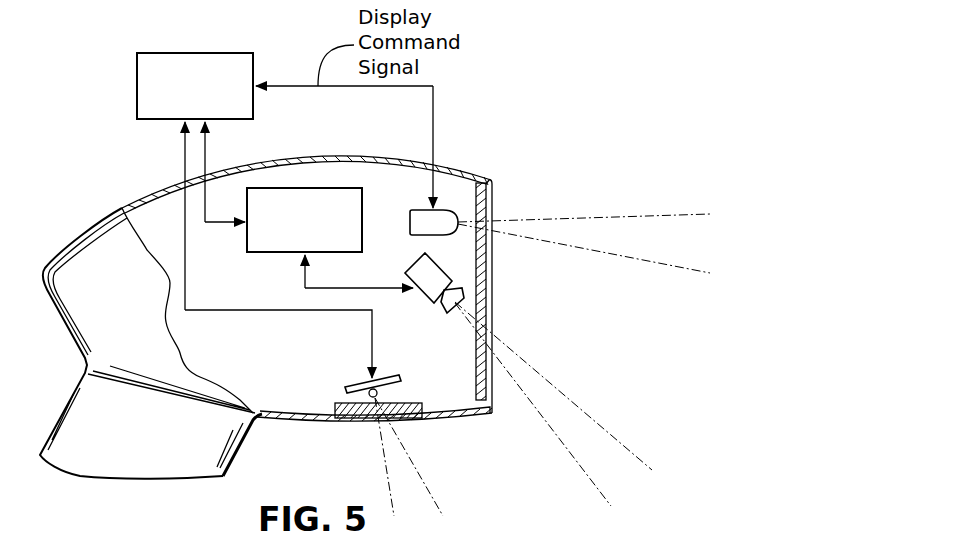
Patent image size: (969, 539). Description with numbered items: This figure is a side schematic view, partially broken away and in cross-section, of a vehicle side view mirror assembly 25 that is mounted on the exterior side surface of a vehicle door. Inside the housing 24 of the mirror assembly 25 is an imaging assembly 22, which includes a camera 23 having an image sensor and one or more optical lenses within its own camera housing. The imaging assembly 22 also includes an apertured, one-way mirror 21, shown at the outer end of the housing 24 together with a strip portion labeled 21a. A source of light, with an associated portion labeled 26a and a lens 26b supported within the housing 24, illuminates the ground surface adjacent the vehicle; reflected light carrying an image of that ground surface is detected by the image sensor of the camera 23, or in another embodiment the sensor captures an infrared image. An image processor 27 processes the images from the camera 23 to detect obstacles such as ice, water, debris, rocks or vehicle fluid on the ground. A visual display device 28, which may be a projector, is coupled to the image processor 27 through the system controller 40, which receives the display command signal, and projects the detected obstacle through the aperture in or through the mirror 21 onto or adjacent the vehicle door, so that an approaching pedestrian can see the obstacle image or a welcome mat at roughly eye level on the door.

The system controller 40 is at (195, 53).
The image processor 27 is at (305, 188).
The one-way mirror 21 is at (486, 317).
The window 21a is at (485, 216).
The mirror assembly 25 is at (73, 231).
The housing 24 is at (143, 190).
The visual display device 28 is at (444, 236).
The imaging assembly 22 is at (466, 282).
The camera 23 is at (426, 293).
The illuminator 26a is at (402, 385).
The lens 26b is at (361, 421).